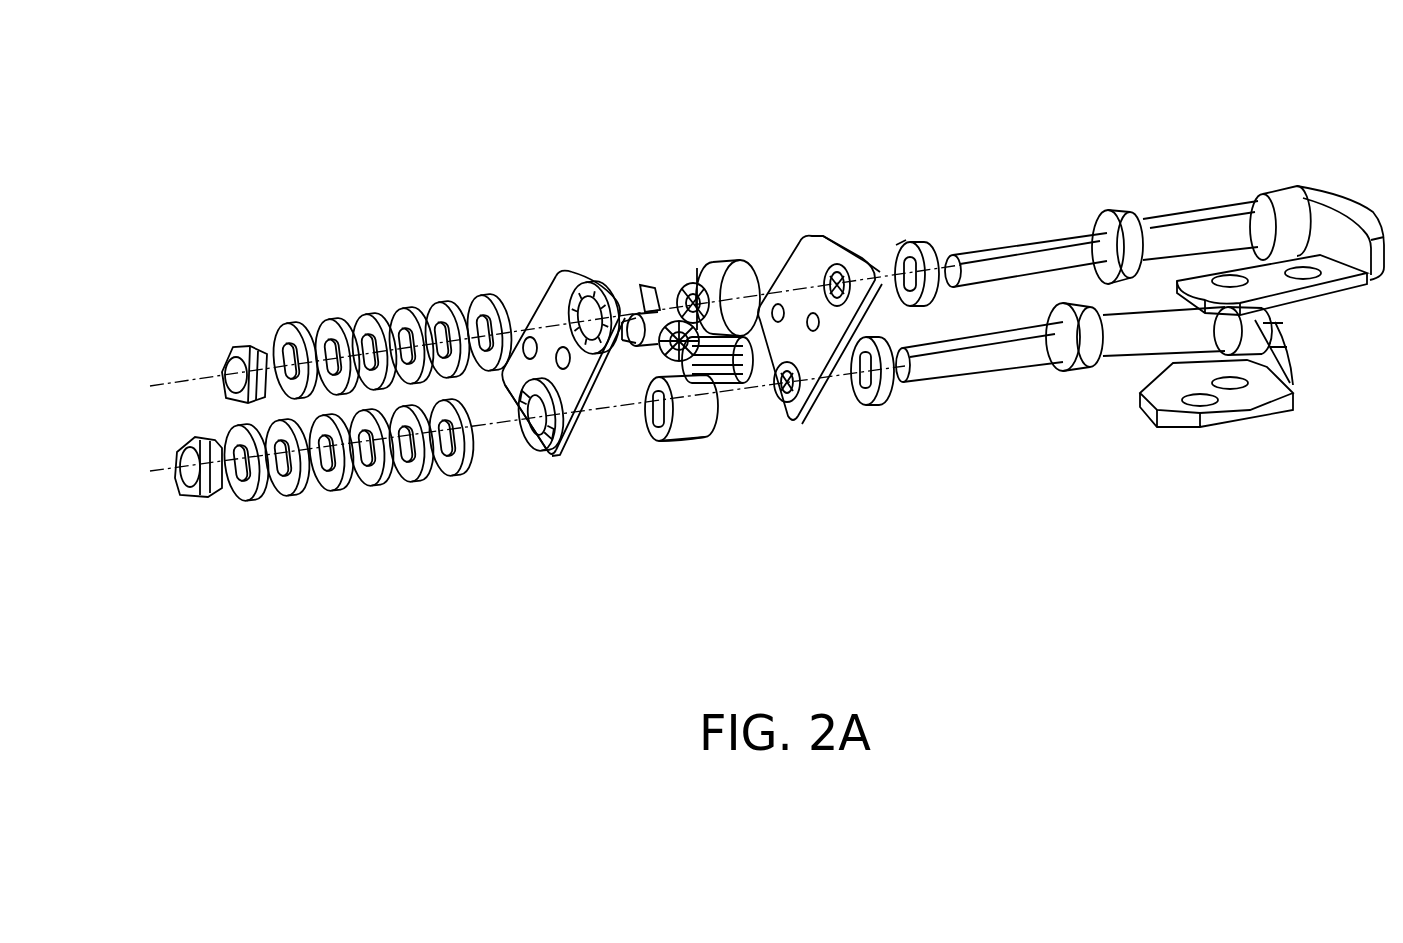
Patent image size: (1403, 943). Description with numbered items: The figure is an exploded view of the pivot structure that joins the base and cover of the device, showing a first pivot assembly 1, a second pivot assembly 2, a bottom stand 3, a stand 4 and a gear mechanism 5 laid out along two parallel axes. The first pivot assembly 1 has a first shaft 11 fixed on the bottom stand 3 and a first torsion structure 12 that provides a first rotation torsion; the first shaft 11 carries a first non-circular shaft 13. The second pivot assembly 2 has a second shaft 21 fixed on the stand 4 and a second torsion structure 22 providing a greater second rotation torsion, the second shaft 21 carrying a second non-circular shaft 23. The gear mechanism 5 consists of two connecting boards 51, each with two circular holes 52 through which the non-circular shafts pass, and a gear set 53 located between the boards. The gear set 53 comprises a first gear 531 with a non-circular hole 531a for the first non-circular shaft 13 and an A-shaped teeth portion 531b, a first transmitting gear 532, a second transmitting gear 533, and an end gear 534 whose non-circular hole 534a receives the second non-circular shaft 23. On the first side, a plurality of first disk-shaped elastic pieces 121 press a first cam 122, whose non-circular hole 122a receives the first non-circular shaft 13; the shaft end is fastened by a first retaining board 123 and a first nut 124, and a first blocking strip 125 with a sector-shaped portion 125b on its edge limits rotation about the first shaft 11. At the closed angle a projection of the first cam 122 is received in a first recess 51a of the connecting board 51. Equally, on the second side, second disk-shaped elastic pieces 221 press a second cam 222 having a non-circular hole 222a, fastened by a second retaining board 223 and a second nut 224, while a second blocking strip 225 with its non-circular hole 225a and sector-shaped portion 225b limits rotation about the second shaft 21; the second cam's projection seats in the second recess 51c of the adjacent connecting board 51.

The first pivot assembly 1 is at (1400, 468).
The second pivot assembly 2 is at (1283, 0).
The bottom stand 3 is at (1237, 398).
The stand 4 is at (1330, 223).
The gear mechanism 5 is at (787, 217).
The first shaft 11 is at (1127, 337).
The first torsion structure 12 is at (477, 475).
The first non-circular shaft 13 is at (967, 360).
The second shaft 21 is at (1207, 230).
The second torsion structure 22 is at (190, 277).
The second non-circular shaft 23 is at (1050, 253).
The connecting board 51 is at (555, 300).
The first recess 51a is at (500, 385).
The second recess 51c is at (562, 273).
The circular hole 52 is at (603, 285).
The gear set 53 is at (697, 258).
The first disk-shaped elastic piece 121 is at (322, 423).
The first cam 122 is at (473, 480).
The non-circular hole 122a is at (393, 470).
The first retaining board 123 is at (237, 437).
The first nut 124 is at (168, 478).
The first blocking strip 125 is at (912, 370).
The sector-shaped portion 125b is at (873, 403).
The second disk-shaped elastic piece 221 is at (363, 327).
The second cam 222 is at (520, 307).
The non-circular hole 222a is at (447, 305).
The second retaining board 223 is at (290, 338).
The second nut 224 is at (228, 357).
The second blocking strip 225 is at (938, 297).
The non-circular hole 225a is at (893, 282).
The sector-shaped portion 225b is at (907, 243).
The first gear 531 is at (653, 430).
The non-circular hole 531a is at (633, 440).
The A-shaped teeth portion 531b is at (653, 397).
The first transmitting gear 532 is at (665, 283).
The second transmitting gear 533 is at (745, 395).
The end gear 534 is at (772, 300).
The non-circular hole 534a is at (686, 300).